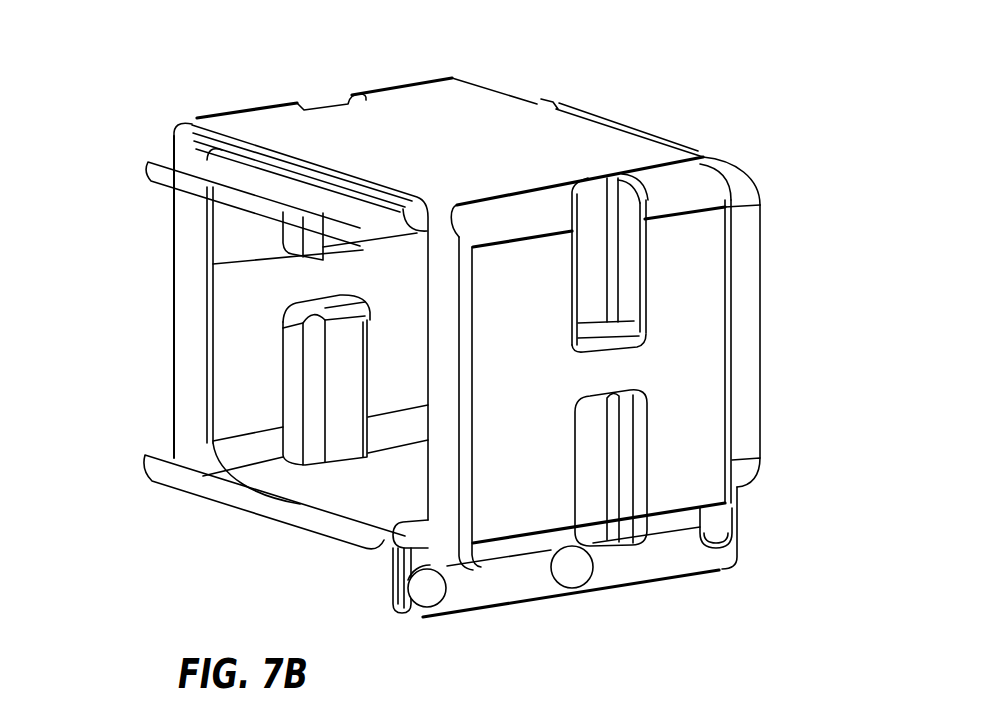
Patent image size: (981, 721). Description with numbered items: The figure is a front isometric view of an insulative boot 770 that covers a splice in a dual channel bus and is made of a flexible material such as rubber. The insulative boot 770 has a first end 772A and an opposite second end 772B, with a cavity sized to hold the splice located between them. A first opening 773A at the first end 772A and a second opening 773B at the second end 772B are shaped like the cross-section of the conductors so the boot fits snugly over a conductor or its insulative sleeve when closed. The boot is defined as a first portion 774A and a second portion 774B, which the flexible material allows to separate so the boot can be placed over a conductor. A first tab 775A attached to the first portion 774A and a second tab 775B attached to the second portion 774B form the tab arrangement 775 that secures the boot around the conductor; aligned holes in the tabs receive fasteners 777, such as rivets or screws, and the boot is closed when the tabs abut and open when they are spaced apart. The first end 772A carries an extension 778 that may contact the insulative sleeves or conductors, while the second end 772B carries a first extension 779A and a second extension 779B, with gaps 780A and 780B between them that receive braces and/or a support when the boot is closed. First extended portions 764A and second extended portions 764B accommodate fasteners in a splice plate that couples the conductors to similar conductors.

The insulative boot 770 is at (241, 50).
The first extended portions 764A is at (257, 118).
The second extended portions 764B is at (422, 80).
The first end 772A is at (772, 140).
The second end 772B is at (142, 258).
The first opening 773A is at (783, 374).
The second opening 773B is at (177, 385).
The first portion 774A is at (760, 430).
The second portion 774B is at (173, 432).
The retention strip 775 is at (714, 580).
The first tab 775A is at (631, 570).
The second tab 775B is at (390, 588).
The fasteners 777 is at (737, 533).
The extension 778 is at (760, 298).
The first extension 779A is at (150, 162).
The second extension 779B is at (213, 507).
The gap 780A is at (150, 222).
The gap 780B is at (395, 514).